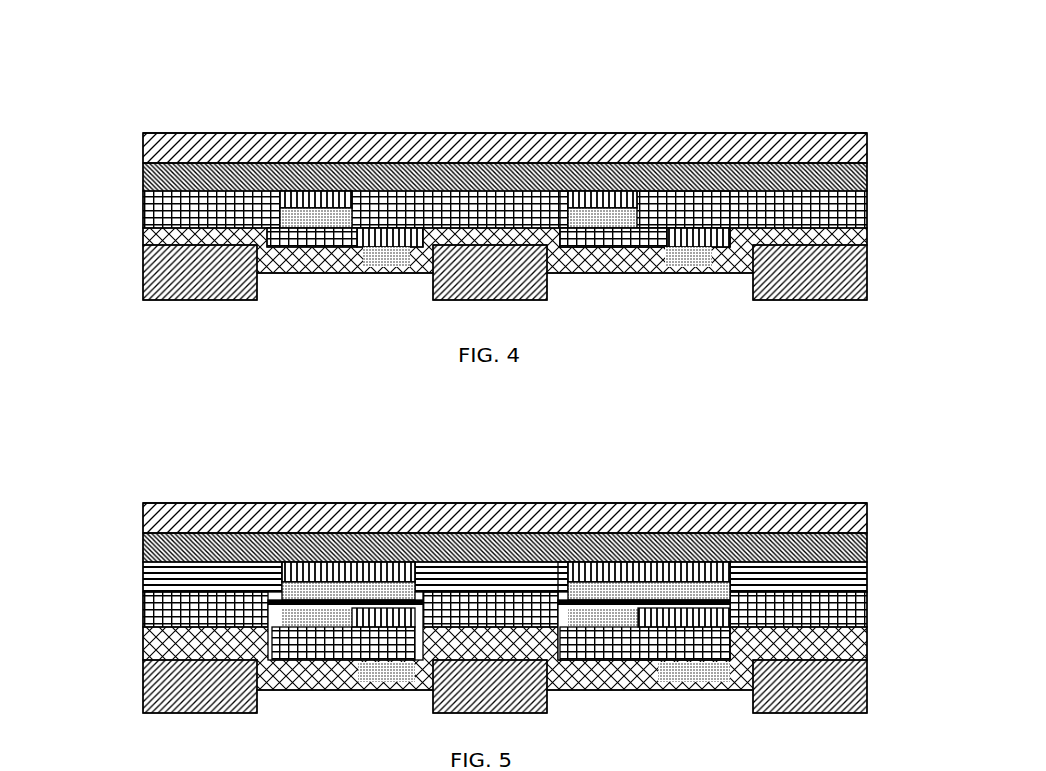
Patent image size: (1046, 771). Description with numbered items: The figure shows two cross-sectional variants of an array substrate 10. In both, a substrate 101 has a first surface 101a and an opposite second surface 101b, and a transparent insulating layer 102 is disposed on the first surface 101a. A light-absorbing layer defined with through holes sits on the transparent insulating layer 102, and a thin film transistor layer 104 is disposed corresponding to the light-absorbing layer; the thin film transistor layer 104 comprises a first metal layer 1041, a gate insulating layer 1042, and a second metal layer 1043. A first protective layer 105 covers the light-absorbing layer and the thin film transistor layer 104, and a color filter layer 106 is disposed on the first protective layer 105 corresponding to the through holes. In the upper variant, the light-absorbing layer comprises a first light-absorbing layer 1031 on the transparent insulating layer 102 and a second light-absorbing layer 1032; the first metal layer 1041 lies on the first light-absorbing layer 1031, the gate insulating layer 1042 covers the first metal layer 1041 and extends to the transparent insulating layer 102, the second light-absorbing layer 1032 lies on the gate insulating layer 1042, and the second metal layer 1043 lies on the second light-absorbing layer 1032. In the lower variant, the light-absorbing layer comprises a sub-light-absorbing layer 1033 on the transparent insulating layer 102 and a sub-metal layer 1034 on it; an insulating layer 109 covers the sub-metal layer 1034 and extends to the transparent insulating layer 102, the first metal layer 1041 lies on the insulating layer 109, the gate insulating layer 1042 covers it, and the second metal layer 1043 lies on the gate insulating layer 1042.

In FIG. 4, the array substrate 10 is at (172, 96).
In FIG. 5, the array substrate 10 is at (172, 466).
In FIG. 4, the substrate 101 is at (867, 143).
In FIG. 5, the substrate 101 is at (867, 513).
In FIG. 4, the first surface 101a is at (143, 167).
In FIG. 5, the first surface 101a is at (143, 538).
In FIG. 4, the second surface 101b is at (143, 137).
In FIG. 5, the second surface 101b is at (143, 508).
In FIG. 4, the transparent insulating layer 102 is at (867, 176).
In FIG. 5, the transparent insulating layer 102 is at (867, 546).
In FIG. 4, the first light-absorbing layer 1031 is at (358, 182).
In FIG. 4, the second light-absorbing layer 1032 is at (395, 222).
In FIG. 5, the sub-light-absorbing layer 1033 is at (365, 568).
In FIG. 5, the sub-metal layer 1034 is at (300, 565).
In FIG. 4, the thin film transistor layer 104 is at (758, 83).
In FIG. 5, the thin film transistor layer 104 is at (758, 457).
In FIG. 4, the first metal layer 1041 is at (600, 220).
In FIG. 5, the first metal layer 1041 is at (620, 617).
In FIG. 4, the gate insulating layer 1042 is at (510, 190).
In FIG. 5, the gate insulating layer 1042 is at (510, 560).
In FIG. 4, the second metal layer 1043 is at (690, 247).
In FIG. 5, the second metal layer 1043 is at (683, 657).
In FIG. 4, the first protective layer 105 is at (867, 211).
In FIG. 5, the first protective layer 105 is at (867, 616).
In FIG. 4, the color filter layer 106 is at (867, 281).
In FIG. 5, the color filter layer 106 is at (867, 651).
In FIG. 5, the insulating layer 109 is at (867, 576).